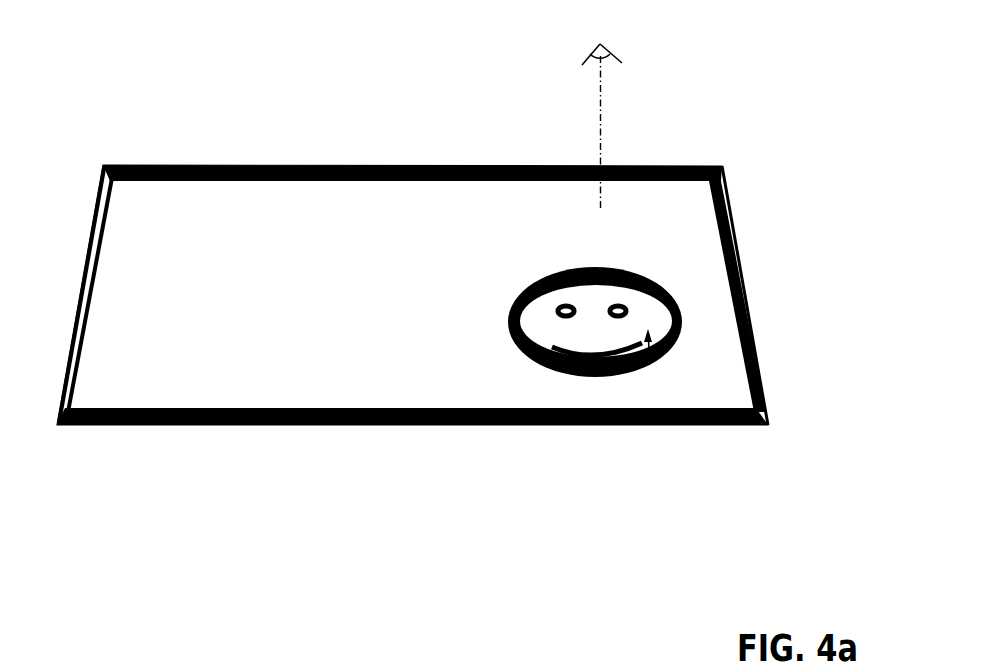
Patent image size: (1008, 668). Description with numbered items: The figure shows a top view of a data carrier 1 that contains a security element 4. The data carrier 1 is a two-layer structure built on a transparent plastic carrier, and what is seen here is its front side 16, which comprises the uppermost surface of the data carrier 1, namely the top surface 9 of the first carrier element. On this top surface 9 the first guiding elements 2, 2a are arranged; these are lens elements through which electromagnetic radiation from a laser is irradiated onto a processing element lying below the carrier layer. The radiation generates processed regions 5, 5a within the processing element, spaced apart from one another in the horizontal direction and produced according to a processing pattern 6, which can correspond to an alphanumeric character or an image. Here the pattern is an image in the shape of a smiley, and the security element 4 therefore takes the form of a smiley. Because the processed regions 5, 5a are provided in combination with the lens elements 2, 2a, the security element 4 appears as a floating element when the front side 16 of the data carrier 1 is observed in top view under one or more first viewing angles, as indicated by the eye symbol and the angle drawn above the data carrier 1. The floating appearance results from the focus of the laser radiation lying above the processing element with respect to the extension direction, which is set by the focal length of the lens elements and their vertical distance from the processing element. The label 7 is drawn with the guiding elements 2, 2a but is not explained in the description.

The data carrier 1 is at (117, 79).
The top surface 9 is at (718, 300).
The front side 16 is at (678, 190).
The first guiding element 2 is at (468, 379).
The first guiding element 2a is at (468, 379).
The decorative element 7 is at (508, 330).
The processed region 5 is at (552, 400).
The processed region 5a is at (552, 400).
The processing pattern 6 is at (541, 340).
The security element 4 is at (649, 352).